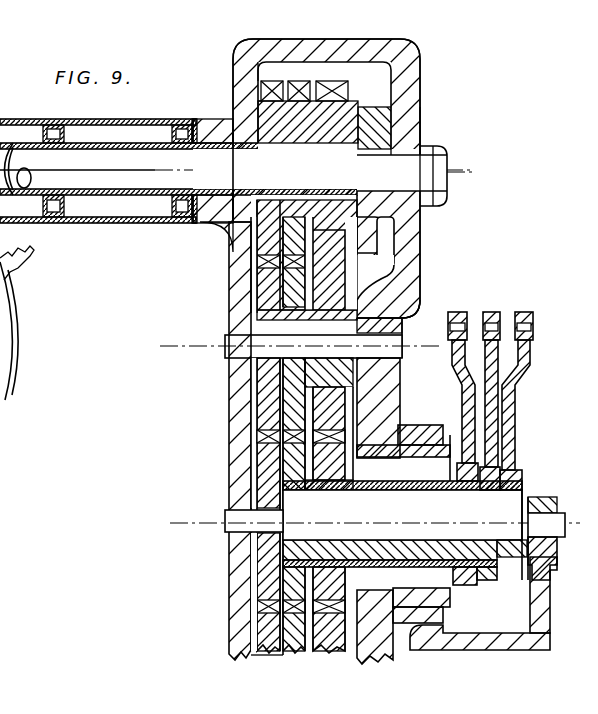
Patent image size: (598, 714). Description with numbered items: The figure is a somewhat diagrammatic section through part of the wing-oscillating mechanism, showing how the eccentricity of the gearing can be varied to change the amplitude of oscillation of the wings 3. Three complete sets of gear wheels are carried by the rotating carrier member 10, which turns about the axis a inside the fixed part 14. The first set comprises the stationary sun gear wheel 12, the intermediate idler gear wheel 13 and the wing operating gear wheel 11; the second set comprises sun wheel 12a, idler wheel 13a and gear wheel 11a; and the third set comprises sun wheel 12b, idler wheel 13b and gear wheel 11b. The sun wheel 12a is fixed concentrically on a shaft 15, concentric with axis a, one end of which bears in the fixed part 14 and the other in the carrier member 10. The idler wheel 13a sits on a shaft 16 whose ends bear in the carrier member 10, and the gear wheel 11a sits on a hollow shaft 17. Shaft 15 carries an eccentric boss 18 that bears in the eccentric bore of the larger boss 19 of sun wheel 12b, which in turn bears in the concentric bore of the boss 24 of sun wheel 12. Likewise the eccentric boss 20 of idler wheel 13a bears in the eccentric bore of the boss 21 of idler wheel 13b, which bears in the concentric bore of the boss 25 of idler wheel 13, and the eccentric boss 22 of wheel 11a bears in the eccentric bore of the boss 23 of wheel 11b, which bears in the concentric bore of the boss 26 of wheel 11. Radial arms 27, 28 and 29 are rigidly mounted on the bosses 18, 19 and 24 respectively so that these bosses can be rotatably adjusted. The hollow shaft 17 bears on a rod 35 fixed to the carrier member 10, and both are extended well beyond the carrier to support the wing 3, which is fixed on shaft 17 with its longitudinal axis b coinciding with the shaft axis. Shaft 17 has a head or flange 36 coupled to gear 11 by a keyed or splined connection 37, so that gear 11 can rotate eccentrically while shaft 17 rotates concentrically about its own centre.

The wing 3 is at (32, 119).
The rod 35 is at (110, 160).
The carrier member 10 is at (395, 108).
The wing operating gear wheel 11 is at (406, 58).
The gear wheel 11a is at (252, 60).
The gear wheel 11b is at (300, 100).
The hollow shaft 17 is at (240, 130).
The boss 26 is at (385, 95).
The head or flange 36 is at (372, 130).
The eccentric boss 22 is at (393, 130).
The longitudinal axis b is at (430, 176).
The boss 23 is at (395, 247).
The keyed or splined connection 37 is at (396, 224).
The idler gear wheel 13 is at (360, 280).
The idler gear wheel 13a is at (300, 280).
The idler gear wheel 13b is at (270, 300).
The boss 25 is at (380, 318).
The eccentric boss 20 is at (395, 322).
The shaft 16 is at (228, 345).
The boss 21 is at (240, 368).
The stationary sun gear wheel 12 is at (330, 468).
The stationary sun gear wheel 12a is at (276, 472).
The stationary sun gear wheel 12b is at (300, 452).
The eccentric boss 18 is at (300, 504).
The boss 24 is at (440, 484).
The axis a is at (375, 515).
The shaft 15 is at (262, 522).
The boss 19 is at (275, 548).
The fixed part 14 is at (428, 432).
The radial arm 29 is at (462, 312).
The radial arm 28 is at (495, 312).
The radial arm 27 is at (528, 365).